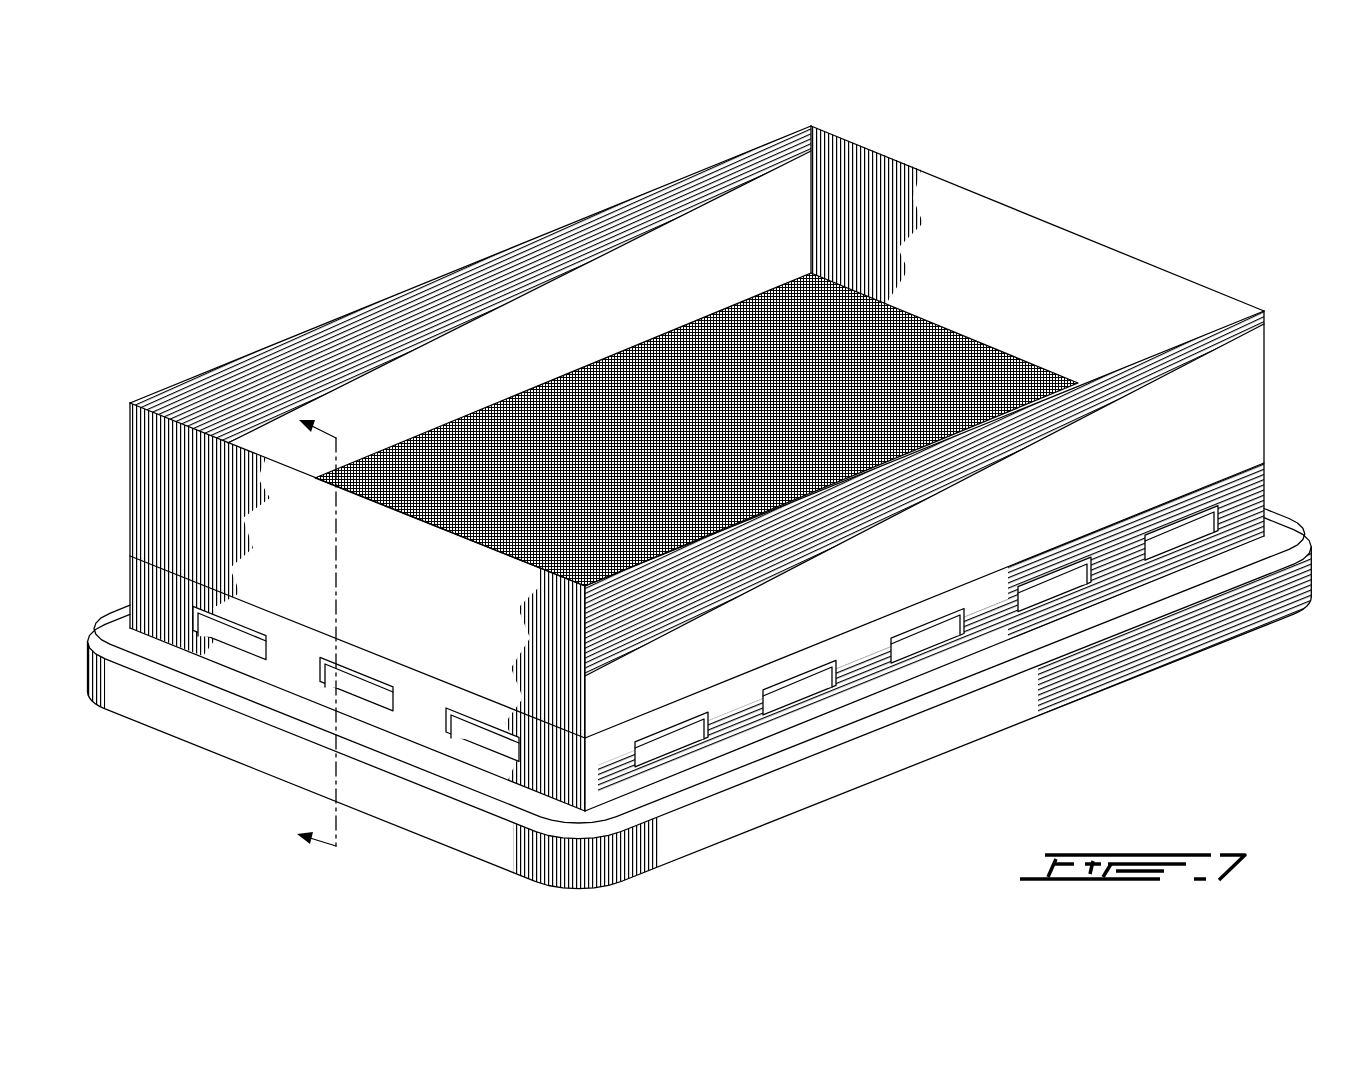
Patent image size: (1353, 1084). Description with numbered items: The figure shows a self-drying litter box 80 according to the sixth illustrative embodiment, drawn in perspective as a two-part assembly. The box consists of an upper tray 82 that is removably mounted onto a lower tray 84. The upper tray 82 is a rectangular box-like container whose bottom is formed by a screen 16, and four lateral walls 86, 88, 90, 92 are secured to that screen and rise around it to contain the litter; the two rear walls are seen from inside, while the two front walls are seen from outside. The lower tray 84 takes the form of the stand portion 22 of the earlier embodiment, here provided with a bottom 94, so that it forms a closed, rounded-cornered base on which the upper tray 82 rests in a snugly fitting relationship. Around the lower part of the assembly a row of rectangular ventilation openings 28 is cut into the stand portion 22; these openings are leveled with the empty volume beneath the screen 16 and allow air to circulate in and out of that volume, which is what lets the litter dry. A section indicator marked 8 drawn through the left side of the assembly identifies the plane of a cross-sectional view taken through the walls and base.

The section line for FIG. 8 is at (327, 643).
The screen 16 is at (617, 400).
The stand portion 22 is at (1212, 610).
The ventilation openings 28 is at (238, 633).
The self-drying litter box 80 is at (122, 427).
The upper tray 82 is at (250, 332).
The lower tray 84 is at (492, 794).
The lateral wall 86 is at (1220, 421).
The lateral wall 88 is at (456, 654).
The lateral wall 90 is at (440, 335).
The lateral wall 92 is at (968, 255).
The bottom 94 is at (605, 537).